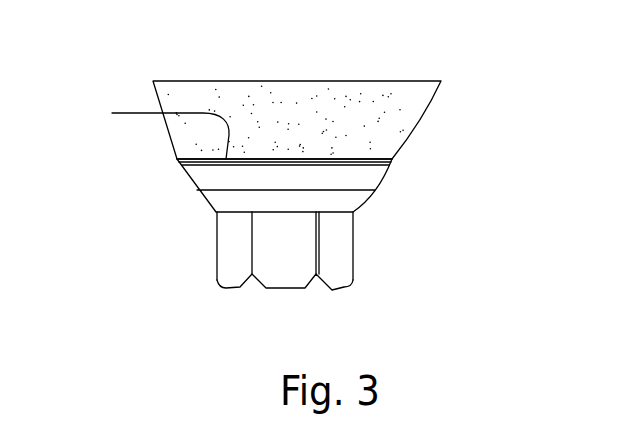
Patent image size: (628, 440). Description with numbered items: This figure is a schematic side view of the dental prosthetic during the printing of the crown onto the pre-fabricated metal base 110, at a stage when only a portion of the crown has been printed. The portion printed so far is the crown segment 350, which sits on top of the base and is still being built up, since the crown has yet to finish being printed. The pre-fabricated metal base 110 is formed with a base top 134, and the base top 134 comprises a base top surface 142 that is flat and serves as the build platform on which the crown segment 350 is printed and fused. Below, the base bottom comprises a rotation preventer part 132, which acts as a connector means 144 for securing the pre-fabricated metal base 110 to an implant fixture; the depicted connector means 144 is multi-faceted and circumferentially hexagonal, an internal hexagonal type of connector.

The pre-fabricated metal base 110 is at (213, 216).
The rotation preventer part 132 is at (343, 260).
The base top 134 is at (210, 173).
The base top surface 142 is at (112, 113).
The connector means 144 is at (288, 267).
The crown segment 350 is at (397, 118).